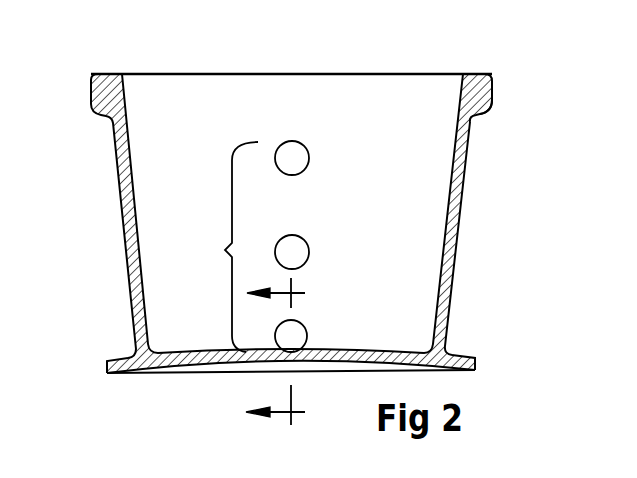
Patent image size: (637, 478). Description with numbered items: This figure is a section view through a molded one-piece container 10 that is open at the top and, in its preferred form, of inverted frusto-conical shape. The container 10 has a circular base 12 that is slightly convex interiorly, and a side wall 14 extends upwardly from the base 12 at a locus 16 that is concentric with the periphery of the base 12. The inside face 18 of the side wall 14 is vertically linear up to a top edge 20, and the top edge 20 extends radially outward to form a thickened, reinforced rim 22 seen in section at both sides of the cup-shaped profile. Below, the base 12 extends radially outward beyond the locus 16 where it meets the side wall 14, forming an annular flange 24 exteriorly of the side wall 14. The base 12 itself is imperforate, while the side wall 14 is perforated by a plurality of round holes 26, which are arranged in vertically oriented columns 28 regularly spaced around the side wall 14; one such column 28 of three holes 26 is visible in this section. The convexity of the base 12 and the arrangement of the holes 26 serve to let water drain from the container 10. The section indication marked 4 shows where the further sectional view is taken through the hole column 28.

The container 10 is at (299, 201).
The base 12 is at (388, 352).
The side wall 14 is at (462, 192).
The locus 16 is at (448, 354).
The inside face 18 is at (130, 148).
The top edge 20 is at (471, 74).
The rim 22 is at (491, 98).
The annular flange 24 is at (107, 360).
The holes 26 is at (301, 159).
The columns 28 is at (224, 247).
The section line 4- 4 is at (283, 352).